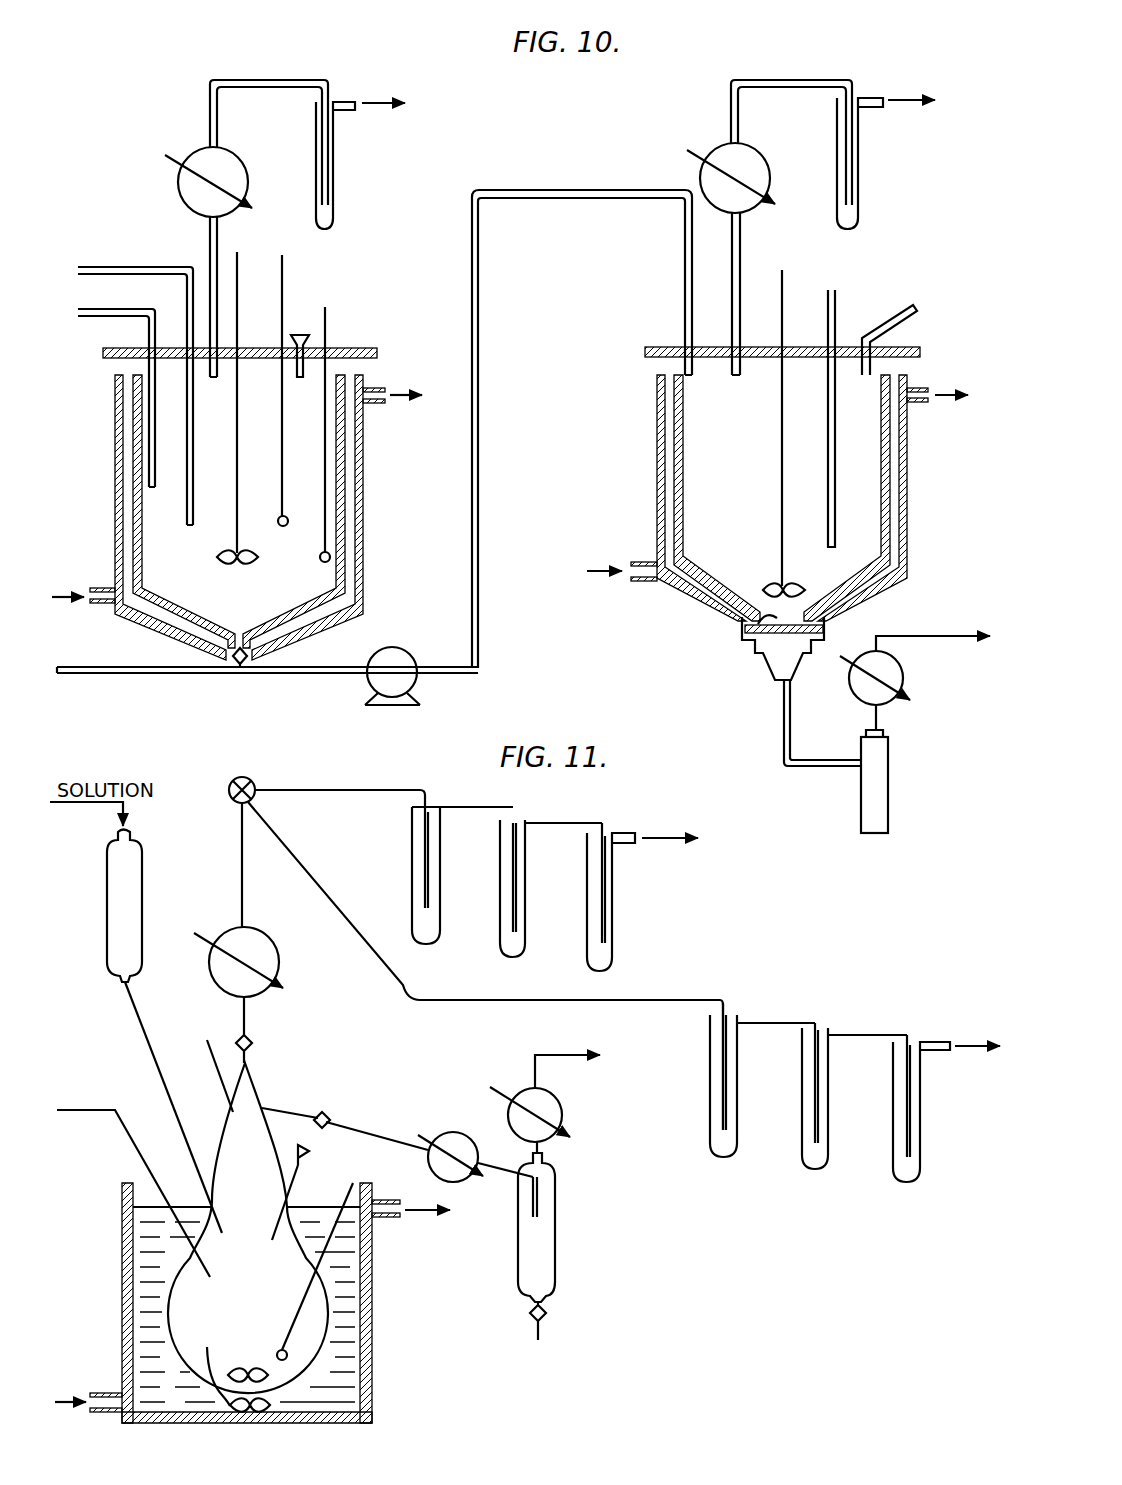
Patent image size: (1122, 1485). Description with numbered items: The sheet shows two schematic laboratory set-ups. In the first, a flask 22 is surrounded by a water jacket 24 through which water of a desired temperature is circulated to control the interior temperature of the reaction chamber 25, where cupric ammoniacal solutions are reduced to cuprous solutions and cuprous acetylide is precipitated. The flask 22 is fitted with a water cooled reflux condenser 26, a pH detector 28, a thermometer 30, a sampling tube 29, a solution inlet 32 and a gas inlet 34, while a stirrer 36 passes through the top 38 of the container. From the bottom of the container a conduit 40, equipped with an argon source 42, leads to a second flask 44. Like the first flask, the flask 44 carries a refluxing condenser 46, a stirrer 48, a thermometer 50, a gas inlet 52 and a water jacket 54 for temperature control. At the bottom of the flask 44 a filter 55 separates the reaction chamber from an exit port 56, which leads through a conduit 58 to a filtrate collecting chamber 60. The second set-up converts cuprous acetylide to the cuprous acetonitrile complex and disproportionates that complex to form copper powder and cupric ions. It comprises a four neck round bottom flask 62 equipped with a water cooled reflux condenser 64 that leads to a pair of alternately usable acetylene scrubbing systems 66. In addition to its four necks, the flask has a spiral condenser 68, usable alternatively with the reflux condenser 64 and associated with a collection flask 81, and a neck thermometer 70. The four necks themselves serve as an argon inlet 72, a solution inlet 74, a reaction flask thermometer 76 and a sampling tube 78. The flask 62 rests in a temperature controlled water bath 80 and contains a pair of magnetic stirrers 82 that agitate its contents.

In FIG. 10, the flask 22 is at (142, 500).
In FIG. 10, the water jacket 24 is at (338, 568).
In FIG. 10, the reaction chamber 25 is at (187, 540).
In FIG. 10, the water cooled reflux condenser 26 is at (192, 152).
In FIG. 10, the pH detector 28 is at (325, 316).
In FIG. 10, the sampling tube 29 is at (300, 333).
In FIG. 10, the thermometer 30 is at (282, 283).
In FIG. 10, the solution inlet 32 is at (133, 310).
In FIG. 10, the gas inlet 34 is at (135, 266).
In FIG. 10, the stirrer 36 is at (237, 272).
In FIG. 10, the top 38 is at (106, 360).
In FIG. 10, the conduit 40 is at (472, 437).
In FIG. 10, the argon source 42 is at (110, 665).
In FIG. 10, the flask 44 is at (878, 510).
In FIG. 10, the refluxing condenser 46 is at (712, 150).
In FIG. 10, the stirrer 48 is at (782, 294).
In FIG. 10, the thermometer 50 is at (835, 313).
In FIG. 10, the gas inlet 52 is at (898, 311).
In FIG. 10, the water jacket 54 is at (657, 447).
In FIG. 10, the filter 55 is at (750, 637).
In FIG. 10, the exit port 56 is at (800, 670).
In FIG. 10, the conduit 58 is at (786, 738).
In FIG. 10, the filtrate collecting chamber 60 is at (888, 793).
In FIG. 11, the four neck round bottom flask 62 is at (172, 1268).
In FIG. 11, the water cooled reflux condenser 64 is at (281, 975).
In FIG. 11, the acetylene scrubbing systems 66 is at (757, 960).
In FIG. 11, the spiral condenser 68 is at (462, 1130).
In FIG. 11, the neck thermometer 70 is at (205, 1032).
In FIG. 11, the argon inlet 72 is at (88, 1110).
In FIG. 11, the solution inlet 74 is at (140, 1033).
In FIG. 11, the reaction flask thermometer 76 is at (350, 1180).
In FIG. 11, the sampling tube 78 is at (295, 1165).
In FIG. 11, the temperature controlled water bath 80 is at (148, 1366).
In FIG. 11, the collection flask 81 is at (557, 1240).
In FIG. 11, the magnetic stirrers 82 is at (240, 1366).